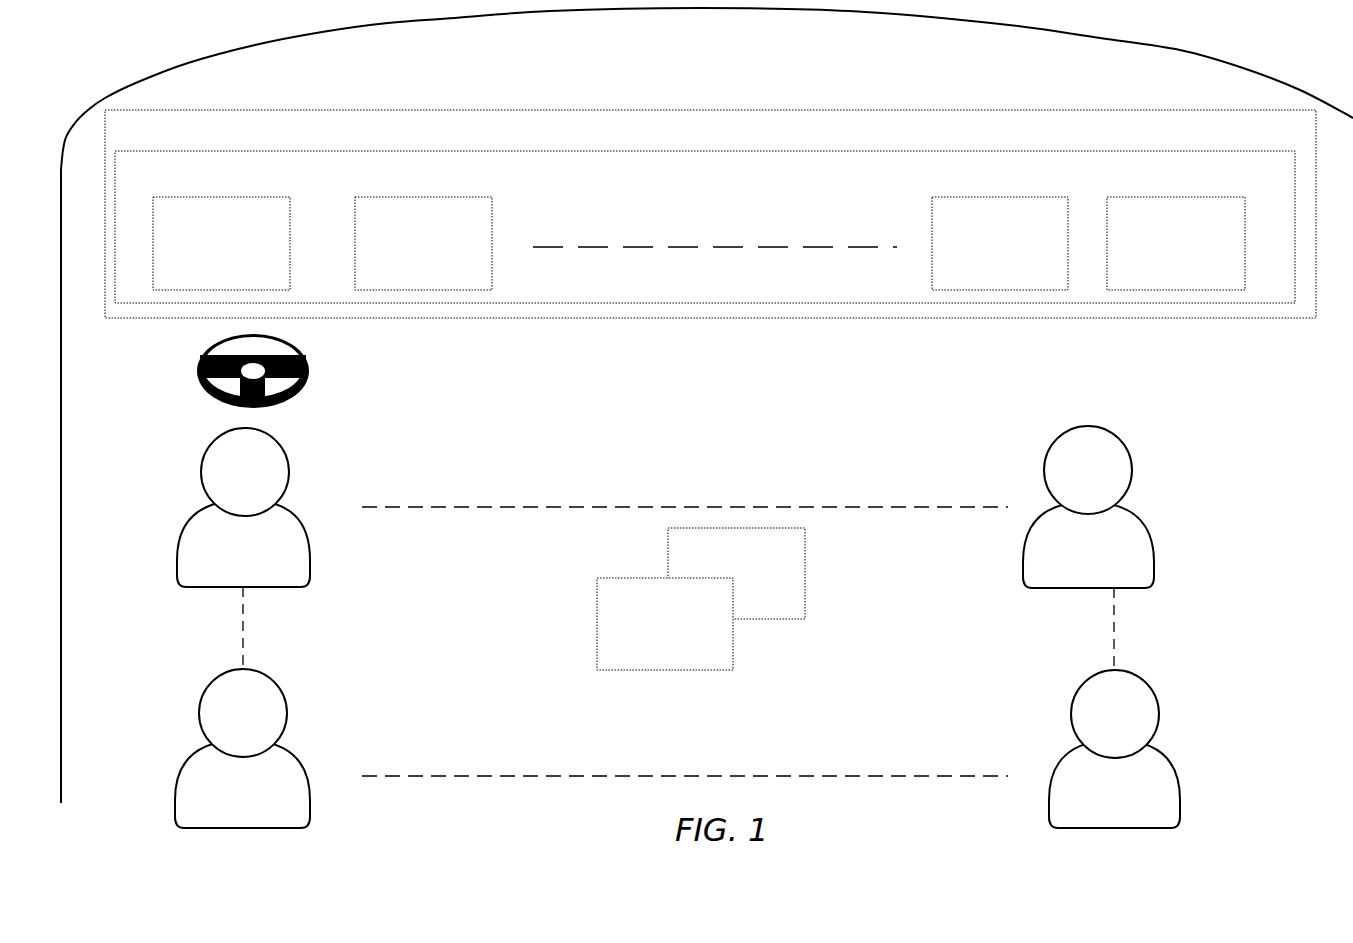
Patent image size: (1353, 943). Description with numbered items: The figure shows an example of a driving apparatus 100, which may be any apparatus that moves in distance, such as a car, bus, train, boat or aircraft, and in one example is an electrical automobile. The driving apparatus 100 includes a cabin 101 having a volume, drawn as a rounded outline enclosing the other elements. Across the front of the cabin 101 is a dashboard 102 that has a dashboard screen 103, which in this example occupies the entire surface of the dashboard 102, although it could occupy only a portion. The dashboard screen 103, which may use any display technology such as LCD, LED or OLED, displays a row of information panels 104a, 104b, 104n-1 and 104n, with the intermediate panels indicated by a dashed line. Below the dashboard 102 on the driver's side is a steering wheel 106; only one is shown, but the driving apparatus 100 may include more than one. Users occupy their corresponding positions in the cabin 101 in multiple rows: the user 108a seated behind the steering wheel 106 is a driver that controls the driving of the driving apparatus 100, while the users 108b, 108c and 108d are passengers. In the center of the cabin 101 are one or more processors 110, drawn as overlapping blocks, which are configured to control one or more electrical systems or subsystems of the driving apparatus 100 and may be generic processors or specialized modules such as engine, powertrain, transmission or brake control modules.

The driving apparatus 100 is at (1243, 68).
The cabin 101 is at (724, 56).
The dashboard 102 is at (800, 110).
The dashboard screen 103 is at (782, 151).
The information panel 104a is at (237, 181).
The information panel 104b is at (438, 181).
The information panel 104n-1 is at (1014, 181).
The information panel 104n is at (1178, 197).
The steering wheel 106 is at (310, 372).
The user 108a is at (282, 455).
The user 108b is at (1114, 443).
The user 108c is at (282, 697).
The user 108d is at (1156, 698).
The processor 110 is at (676, 672).